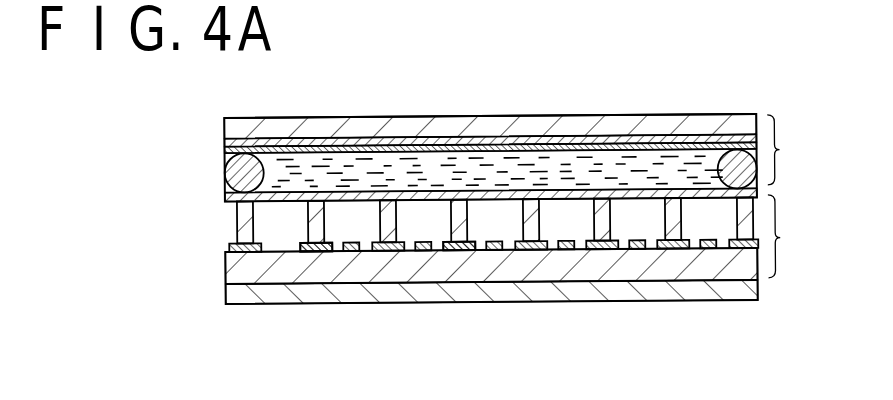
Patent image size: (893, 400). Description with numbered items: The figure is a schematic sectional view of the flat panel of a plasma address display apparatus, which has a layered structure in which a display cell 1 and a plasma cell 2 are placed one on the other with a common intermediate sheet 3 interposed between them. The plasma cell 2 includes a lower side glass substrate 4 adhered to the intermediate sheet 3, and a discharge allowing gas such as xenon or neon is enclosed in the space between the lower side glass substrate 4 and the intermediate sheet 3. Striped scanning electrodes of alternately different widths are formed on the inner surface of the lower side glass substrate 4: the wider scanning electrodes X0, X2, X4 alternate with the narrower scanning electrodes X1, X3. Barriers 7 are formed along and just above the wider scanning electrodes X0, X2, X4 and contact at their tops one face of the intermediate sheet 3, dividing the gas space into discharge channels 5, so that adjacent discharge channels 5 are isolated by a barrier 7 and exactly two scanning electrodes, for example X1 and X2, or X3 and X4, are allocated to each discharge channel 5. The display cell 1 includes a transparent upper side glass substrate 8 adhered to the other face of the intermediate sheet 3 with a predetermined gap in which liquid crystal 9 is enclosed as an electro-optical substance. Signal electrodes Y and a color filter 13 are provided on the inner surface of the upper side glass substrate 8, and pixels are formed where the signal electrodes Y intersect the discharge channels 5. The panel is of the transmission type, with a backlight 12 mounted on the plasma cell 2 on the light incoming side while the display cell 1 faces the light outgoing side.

The display cell 1 is at (784, 150).
The plasma cell 2 is at (785, 236).
The intermediate sheet 3 is at (752, 197).
The lower side glass substrate 4 is at (732, 266).
The discharge channel 5 is at (702, 216).
The barrier 7 is at (549, 218).
The upper side glass substrate 8 is at (684, 125).
The liquid crystal 9 is at (443, 165).
The backlight 12 is at (618, 303).
The color filter 13 is at (290, 117).
The signal electrode Y is at (572, 146).
The wider scanning electrode X0 is at (316, 251).
The narrower scanning electrode X1 is at (350, 251).
The wider scanning electrode X2 is at (386, 251).
The narrower scanning electrode X3 is at (423, 251).
The wider scanning electrode X4 is at (458, 251).